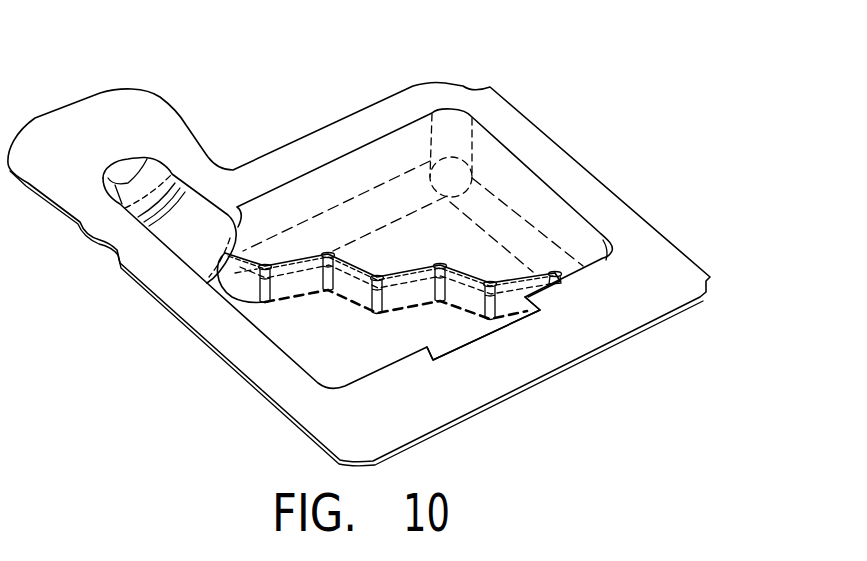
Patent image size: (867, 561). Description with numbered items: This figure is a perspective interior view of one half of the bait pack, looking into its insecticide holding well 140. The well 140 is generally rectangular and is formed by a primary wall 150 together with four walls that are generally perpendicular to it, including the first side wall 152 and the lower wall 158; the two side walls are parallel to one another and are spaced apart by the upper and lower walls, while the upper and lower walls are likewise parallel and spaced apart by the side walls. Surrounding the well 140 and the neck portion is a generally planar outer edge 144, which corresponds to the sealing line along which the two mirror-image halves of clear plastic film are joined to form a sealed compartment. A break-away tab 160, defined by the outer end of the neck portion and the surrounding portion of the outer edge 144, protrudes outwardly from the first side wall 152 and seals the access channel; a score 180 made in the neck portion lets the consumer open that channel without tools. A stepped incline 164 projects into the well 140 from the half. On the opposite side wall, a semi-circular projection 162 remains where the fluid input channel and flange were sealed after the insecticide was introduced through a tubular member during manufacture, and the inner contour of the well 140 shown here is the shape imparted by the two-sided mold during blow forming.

The insecticide holding well 140 is at (440, 143).
The outer edge 144 is at (620, 307).
The primary wall 150 is at (471, 251).
The first side wall 152 is at (345, 200).
The lower wall 158 is at (577, 227).
The break-away tab 160 is at (160, 117).
The semi-circular projection 162 is at (497, 333).
The stepped incline 164 is at (460, 297).
The score 180 is at (178, 184).